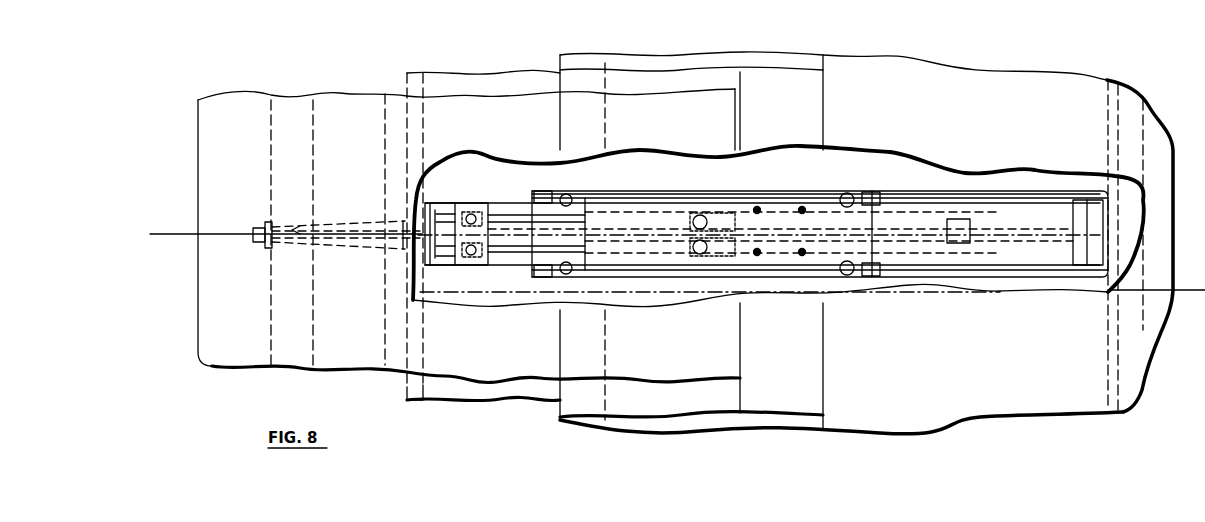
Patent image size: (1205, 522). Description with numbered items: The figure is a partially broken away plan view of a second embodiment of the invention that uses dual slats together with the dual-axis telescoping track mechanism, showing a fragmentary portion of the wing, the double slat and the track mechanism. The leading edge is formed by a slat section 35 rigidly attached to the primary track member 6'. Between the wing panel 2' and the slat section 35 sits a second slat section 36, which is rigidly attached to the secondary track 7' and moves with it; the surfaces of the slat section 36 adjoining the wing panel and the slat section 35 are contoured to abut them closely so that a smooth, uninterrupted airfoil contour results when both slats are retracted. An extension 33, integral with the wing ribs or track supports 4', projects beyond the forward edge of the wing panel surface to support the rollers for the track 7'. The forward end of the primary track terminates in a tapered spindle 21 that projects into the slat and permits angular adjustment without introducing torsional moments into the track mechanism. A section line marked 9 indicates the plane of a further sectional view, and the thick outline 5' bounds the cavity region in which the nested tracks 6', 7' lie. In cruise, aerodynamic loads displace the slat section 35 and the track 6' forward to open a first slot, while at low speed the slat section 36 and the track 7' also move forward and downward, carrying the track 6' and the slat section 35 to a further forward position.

The wing panel 2' is at (866, 251).
The track supports 4' is at (766, 242).
The cavity 5' is at (778, 216).
The primary track member 6' is at (505, 245).
The secondary track 7' is at (759, 260).
The section line 9- 9 is at (170, 241).
The tapered spindle 21 is at (338, 244).
The extension 33 is at (613, 197).
The slat section 35 is at (237, 333).
The second slat section 36 is at (468, 388).